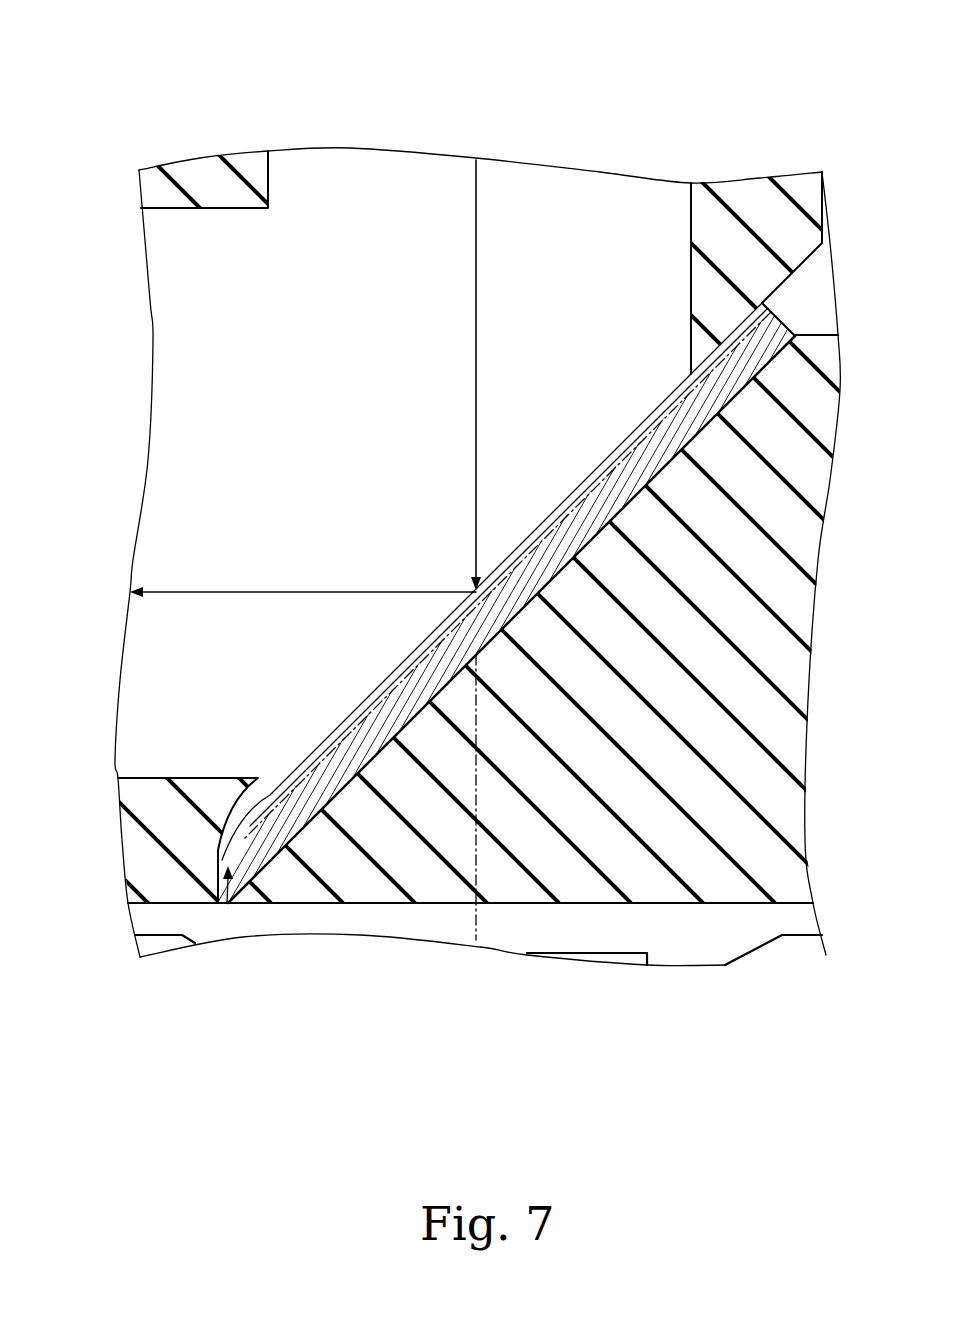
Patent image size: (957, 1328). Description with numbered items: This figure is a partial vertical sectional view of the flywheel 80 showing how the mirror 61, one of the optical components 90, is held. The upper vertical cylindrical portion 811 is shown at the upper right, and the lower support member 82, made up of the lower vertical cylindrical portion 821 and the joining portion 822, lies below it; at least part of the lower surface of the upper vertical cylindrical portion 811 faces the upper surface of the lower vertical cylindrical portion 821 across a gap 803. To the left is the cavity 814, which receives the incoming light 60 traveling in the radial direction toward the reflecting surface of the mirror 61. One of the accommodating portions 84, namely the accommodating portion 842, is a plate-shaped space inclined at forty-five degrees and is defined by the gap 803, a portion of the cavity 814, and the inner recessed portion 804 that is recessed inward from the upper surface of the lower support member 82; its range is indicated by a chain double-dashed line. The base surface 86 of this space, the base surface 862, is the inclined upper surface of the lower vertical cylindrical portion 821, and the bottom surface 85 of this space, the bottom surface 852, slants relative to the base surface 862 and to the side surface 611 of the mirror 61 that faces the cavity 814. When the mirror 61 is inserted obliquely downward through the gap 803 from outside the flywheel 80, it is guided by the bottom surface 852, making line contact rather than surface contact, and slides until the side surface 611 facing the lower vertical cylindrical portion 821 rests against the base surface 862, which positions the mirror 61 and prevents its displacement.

The flywheel 80 is at (630, 130).
The incoming light 60 is at (476, 313).
The mirror 61 is at (363, 730).
The optical components 90 is at (265, 405).
The side surfaces 611 is at (613, 445).
The upper vertical cylindrical portion 811 is at (712, 230).
The gap 803 is at (750, 345).
The inner recessed portion 804 is at (227, 903).
The cavity 814 is at (376, 345).
The lower support member 82 is at (478, 593).
The lower vertical cylindrical portion 821 is at (727, 818).
The joining portion 822 is at (173, 827).
The accommodating portions 84 is at (508, 698).
The accommodating portion 842 is at (322, 780).
The bottom surface 85 is at (493, 650).
The bottom surface 852 is at (238, 825).
The base surface 86 is at (619, 694).
The base surface 862 is at (443, 687).